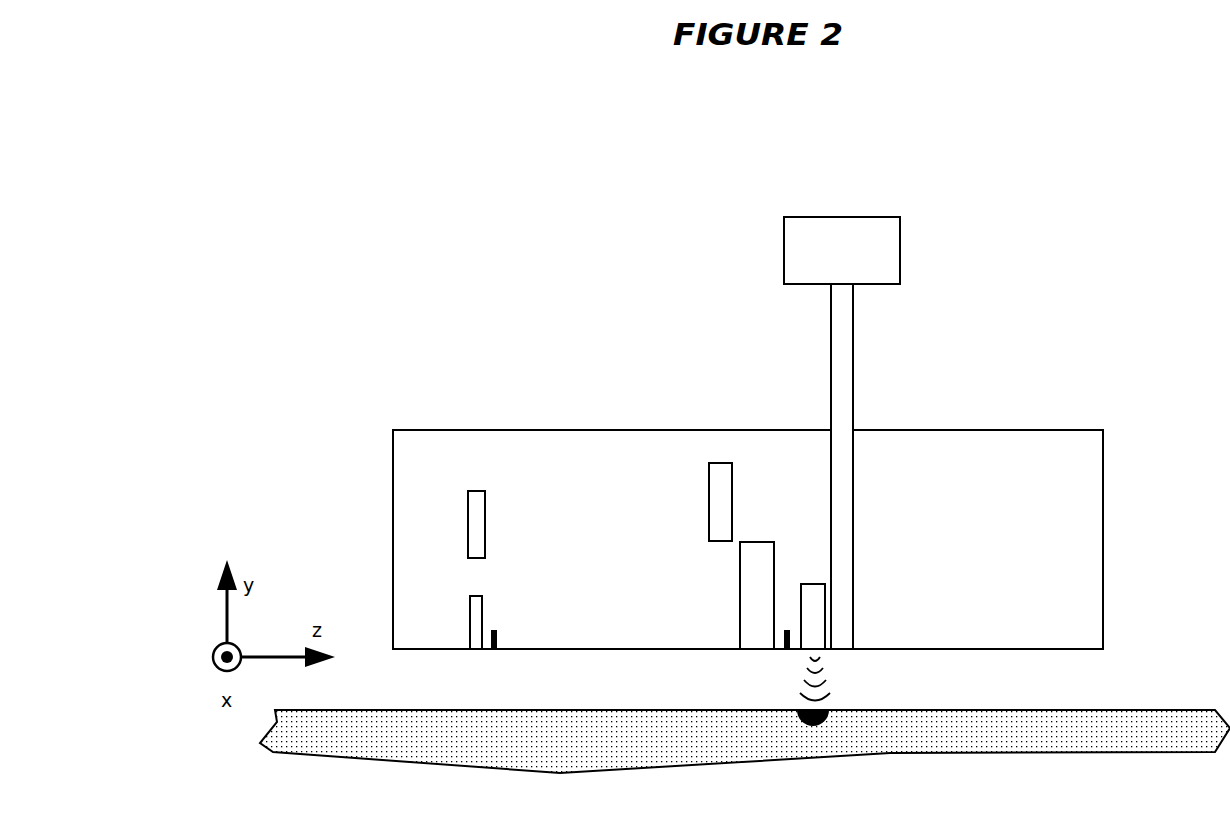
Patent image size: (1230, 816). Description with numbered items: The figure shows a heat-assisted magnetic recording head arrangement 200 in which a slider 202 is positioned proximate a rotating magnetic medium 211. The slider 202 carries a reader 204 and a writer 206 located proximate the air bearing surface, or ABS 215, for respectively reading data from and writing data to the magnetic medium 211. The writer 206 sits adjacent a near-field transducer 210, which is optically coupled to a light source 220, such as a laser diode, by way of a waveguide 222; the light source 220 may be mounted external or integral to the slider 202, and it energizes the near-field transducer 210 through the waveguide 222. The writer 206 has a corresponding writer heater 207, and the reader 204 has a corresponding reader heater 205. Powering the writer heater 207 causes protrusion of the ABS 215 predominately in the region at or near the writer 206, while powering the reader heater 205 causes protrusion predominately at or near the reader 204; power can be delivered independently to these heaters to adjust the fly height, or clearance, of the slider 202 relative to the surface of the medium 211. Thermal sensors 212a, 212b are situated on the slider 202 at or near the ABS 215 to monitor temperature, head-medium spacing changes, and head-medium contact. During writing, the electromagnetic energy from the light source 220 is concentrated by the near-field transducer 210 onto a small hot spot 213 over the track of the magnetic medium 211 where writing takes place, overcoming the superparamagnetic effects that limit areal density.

The HAMR head arrangement 200 is at (482, 264).
The slider 202 is at (1138, 404).
The reader 204 is at (470, 612).
The reader heater 205 is at (486, 525).
The writer 206 is at (740, 606).
The writer heater 207 is at (709, 511).
The near-field transducer 210 is at (811, 584).
The magnetic medium 211 is at (1163, 709).
The thermal sensor 212a is at (787, 650).
The thermal sensor 212b is at (494, 650).
The hot spot 213 is at (806, 722).
The ABS 215 is at (987, 650).
The light source 220 is at (901, 243).
The waveguide 222 is at (855, 359).